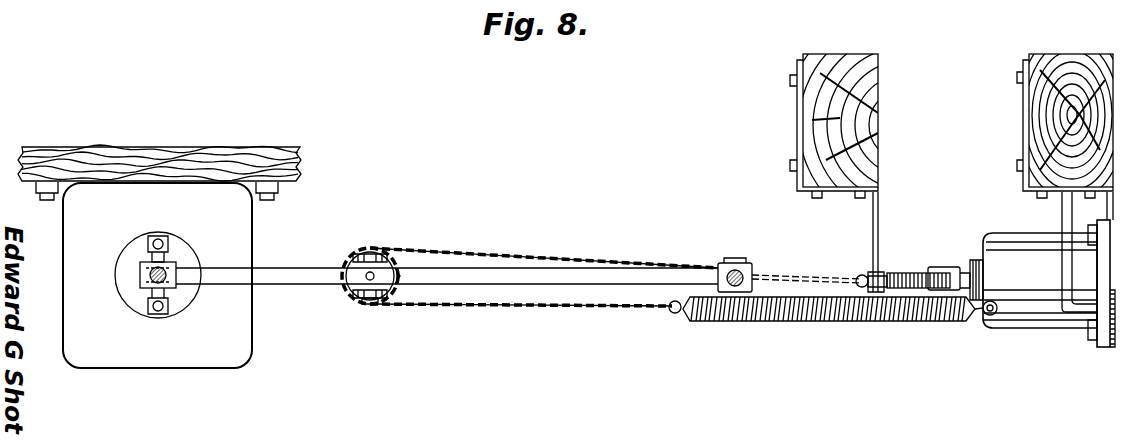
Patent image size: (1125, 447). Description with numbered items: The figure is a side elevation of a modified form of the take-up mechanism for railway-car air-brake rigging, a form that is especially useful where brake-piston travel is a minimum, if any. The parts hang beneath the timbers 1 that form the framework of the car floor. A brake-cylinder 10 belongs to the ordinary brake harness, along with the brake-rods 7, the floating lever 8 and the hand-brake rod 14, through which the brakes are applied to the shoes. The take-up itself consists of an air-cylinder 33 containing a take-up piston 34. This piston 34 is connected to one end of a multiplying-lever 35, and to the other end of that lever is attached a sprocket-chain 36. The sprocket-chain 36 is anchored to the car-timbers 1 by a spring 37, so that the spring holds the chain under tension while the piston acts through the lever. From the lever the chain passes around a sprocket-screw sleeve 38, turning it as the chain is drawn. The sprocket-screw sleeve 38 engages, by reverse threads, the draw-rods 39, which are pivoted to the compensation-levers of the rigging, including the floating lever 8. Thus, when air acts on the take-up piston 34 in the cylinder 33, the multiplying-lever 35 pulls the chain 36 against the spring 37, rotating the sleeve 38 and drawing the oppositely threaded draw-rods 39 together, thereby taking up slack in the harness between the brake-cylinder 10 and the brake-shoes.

The timbers or framework of the floor of a car 1 is at (160, 147).
The brake-rods 7 is at (742, 270).
The floating lever 8 is at (278, 268).
The brake-cylinder 10 is at (157, 275).
The hand-brake rod 14 is at (150, 277).
The air-cylinder 33 is at (1022, 296).
The take-up piston 34 is at (948, 267).
The multiplying-lever 35 is at (893, 271).
The sprocket-chain 36 is at (562, 261).
The spring 37 is at (787, 322).
The sprocket-screw sleeve 38 is at (391, 302).
The draw-rods 39 is at (345, 290).